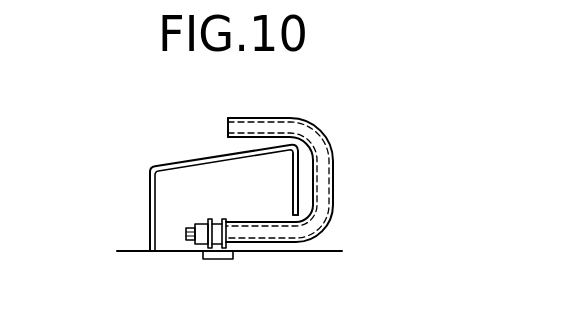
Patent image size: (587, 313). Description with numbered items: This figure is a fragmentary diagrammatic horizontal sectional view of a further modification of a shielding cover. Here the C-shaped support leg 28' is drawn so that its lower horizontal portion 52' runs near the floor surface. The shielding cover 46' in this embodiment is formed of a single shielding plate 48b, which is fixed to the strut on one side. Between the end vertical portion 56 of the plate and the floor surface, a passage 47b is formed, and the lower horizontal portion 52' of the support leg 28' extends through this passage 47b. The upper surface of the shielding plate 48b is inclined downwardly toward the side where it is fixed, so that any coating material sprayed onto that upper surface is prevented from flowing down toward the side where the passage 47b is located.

The shielding plate 48b is at (200, 159).
The shielding cover 46' is at (115, 208).
The end vertical portion 56 is at (293, 212).
The C-shaped support leg 28' is at (307, 180).
The passage 47b is at (322, 221).
The lower horizontal portion 52' is at (252, 255).